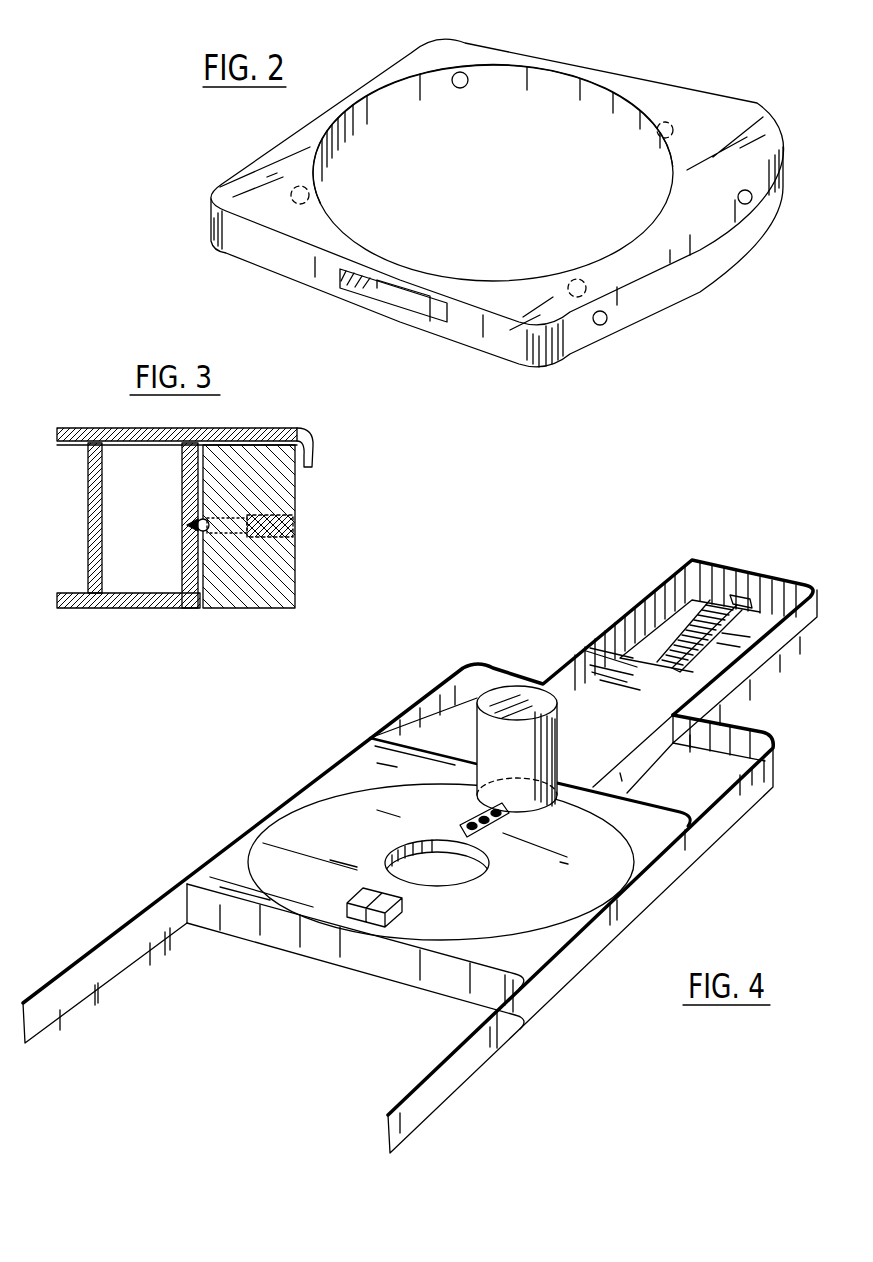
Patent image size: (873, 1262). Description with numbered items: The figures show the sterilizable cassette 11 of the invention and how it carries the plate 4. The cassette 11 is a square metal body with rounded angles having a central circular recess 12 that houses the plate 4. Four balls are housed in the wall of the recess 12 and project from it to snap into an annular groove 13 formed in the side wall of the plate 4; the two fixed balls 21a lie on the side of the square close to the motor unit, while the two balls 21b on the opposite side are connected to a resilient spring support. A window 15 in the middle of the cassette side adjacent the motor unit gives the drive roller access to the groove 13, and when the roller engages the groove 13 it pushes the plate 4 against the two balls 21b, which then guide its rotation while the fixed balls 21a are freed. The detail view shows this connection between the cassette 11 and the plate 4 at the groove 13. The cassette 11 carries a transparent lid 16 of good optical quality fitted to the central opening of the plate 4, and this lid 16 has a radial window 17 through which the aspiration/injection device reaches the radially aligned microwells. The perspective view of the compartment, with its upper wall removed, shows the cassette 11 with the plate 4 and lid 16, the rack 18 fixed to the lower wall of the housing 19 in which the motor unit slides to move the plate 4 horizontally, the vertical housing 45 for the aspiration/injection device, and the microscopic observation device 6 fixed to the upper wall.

In FIG. 2, the cassette 11 is at (453, 56).
In FIG. 3, the cassette 11 is at (270, 577).
In FIG. 4, the cassette 11 is at (663, 826).
In FIG. 2, the central circular recess 12 is at (587, 138).
In FIG. 4, the central circular recess 12 is at (445, 882).
In FIG. 2, the resiliently supported balls 21b is at (468, 77).
In FIG. 3, the resiliently supported balls 21b is at (207, 520).
In FIG. 2, the fixed support balls 21a is at (297, 205).
In FIG. 2, the window 15 is at (383, 293).
In FIG. 3, the transparent lid 16 is at (96, 406).
In FIG. 4, the transparent lid 16 is at (608, 870).
In FIG. 3, the plate 4 is at (120, 605).
In FIG. 3, the annular groove 13 is at (197, 535).
In FIG. 4, the vertical housing 45 is at (530, 703).
In FIG. 4, the rack 18 is at (717, 597).
In FIG. 4, the housing 19 is at (753, 618).
In FIG. 4, the radial window 17 is at (497, 833).
In FIG. 4, the microscopic observation device 6 is at (357, 913).